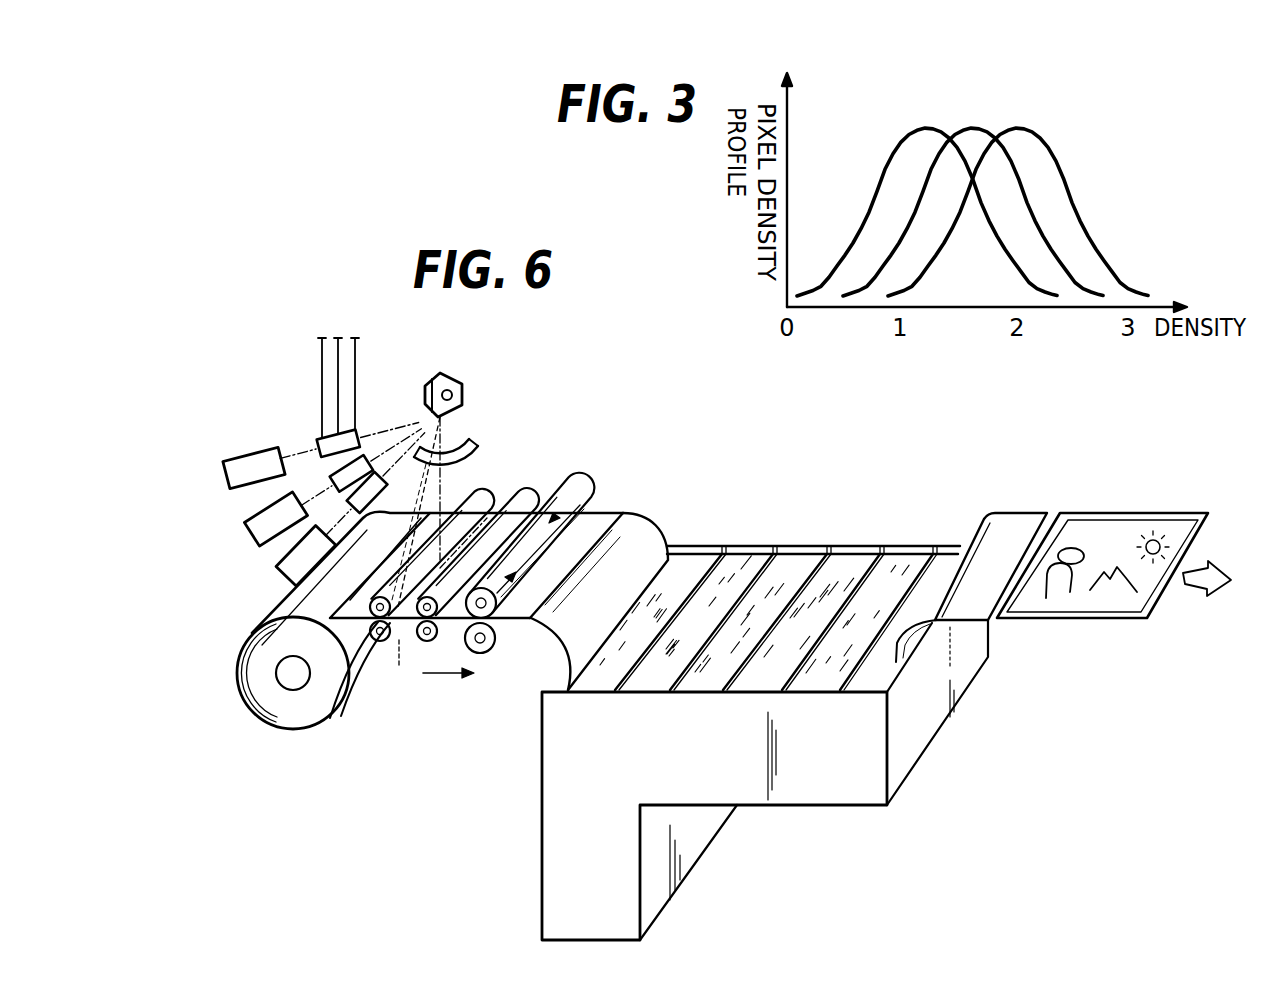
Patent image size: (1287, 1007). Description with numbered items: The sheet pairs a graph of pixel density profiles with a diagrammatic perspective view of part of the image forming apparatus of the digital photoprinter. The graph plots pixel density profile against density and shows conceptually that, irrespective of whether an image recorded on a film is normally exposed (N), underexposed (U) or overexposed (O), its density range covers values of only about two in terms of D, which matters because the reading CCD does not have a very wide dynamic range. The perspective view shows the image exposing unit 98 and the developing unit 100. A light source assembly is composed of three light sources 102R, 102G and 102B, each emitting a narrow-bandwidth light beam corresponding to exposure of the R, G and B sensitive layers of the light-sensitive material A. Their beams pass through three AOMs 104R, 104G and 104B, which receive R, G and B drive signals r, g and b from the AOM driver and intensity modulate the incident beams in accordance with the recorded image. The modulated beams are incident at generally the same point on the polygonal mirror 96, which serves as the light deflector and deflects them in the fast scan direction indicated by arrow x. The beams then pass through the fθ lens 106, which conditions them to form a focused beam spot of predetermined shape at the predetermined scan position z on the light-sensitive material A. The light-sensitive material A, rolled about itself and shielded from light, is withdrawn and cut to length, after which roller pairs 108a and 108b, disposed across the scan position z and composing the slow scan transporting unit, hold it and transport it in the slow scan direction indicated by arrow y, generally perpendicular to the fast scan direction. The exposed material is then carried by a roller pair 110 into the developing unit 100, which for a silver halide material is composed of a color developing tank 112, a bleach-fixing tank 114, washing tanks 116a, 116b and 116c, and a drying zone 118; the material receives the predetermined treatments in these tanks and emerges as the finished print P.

In FIG. 6, the polygonal mirror 96 is at (460, 381).
In FIG. 6, the image exposing unit 98 is at (393, 712).
In FIG. 6, the developing unit 100 is at (916, 494).
In FIG. 6, the light source 102R is at (225, 472).
In FIG. 6, the light source 102G is at (252, 534).
In FIG. 6, the light source 102B is at (286, 576).
In FIG. 6, the AOM 104R is at (320, 438).
In FIG. 6, the AOM 104G is at (333, 478).
In FIG. 6, the AOM 104B is at (378, 472).
In FIG. 6, the fθ lens 106 is at (475, 440).
In FIG. 6, the roller pair 108a is at (377, 641).
In FIG. 6, the roller pair 108b is at (540, 487).
In FIG. 6, the roller pair 110 is at (485, 653).
In FIG. 6, the color developing tank 112 is at (692, 560).
In FIG. 6, the bleach-fixing tank 114 is at (630, 693).
In FIG. 6, the washing tank 116a is at (797, 563).
In FIG. 6, the washing tank 116b is at (733, 693).
In FIG. 6, the washing tank 116c is at (813, 690).
In FIG. 6, the drying zone 118 is at (890, 697).
In FIG. 6, the finished print P is at (1082, 608).
In FIG. 6, the light-sensitive material A is at (627, 517).
In FIG. 6, the fast scan direction x is at (573, 497).
In FIG. 6, the slow scan direction y is at (448, 681).
In FIG. 6, the scan position z is at (398, 661).
In FIG. 6, the R drive signal r is at (319, 341).
In FIG. 6, the G drive signal g is at (338, 338).
In FIG. 6, the B drive signal b is at (358, 344).
In FIG. 3, the underexposed image U is at (882, 177).
In FIG. 3, the normally exposed image N is at (979, 125).
In FIG. 3, the overexposed image O is at (1075, 179).